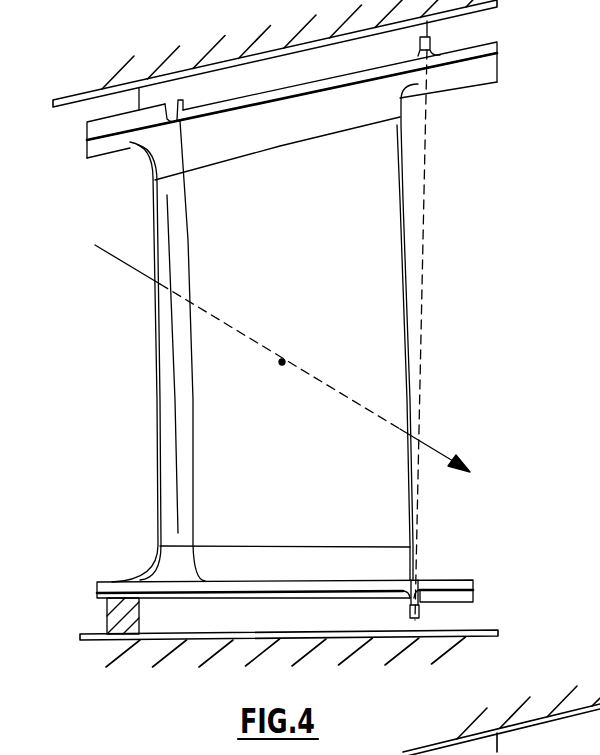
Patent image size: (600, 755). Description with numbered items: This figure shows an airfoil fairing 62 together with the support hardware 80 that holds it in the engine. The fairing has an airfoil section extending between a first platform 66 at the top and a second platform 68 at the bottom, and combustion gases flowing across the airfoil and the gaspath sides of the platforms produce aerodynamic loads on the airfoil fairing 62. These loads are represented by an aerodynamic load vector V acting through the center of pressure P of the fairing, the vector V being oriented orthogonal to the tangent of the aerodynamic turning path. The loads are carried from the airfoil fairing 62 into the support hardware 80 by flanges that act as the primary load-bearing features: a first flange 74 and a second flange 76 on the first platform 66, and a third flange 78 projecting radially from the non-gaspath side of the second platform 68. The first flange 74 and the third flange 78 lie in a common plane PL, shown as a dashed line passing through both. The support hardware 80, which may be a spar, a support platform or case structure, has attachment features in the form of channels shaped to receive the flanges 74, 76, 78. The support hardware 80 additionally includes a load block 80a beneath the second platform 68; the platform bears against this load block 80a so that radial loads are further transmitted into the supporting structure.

The airfoil fairing 62 is at (110, 428).
The first platform 66 is at (497, 50).
The second platform 68 is at (452, 580).
The first flange 74 is at (450, 42).
The second flange 76 is at (195, 104).
The third flange 78 is at (437, 616).
The support hardware 80 is at (78, 110).
The load block 80a is at (139, 604).
The center of pressure P is at (282, 362).
The common plane PL is at (425, 322).
The aerodynamic load vector V is at (440, 447).